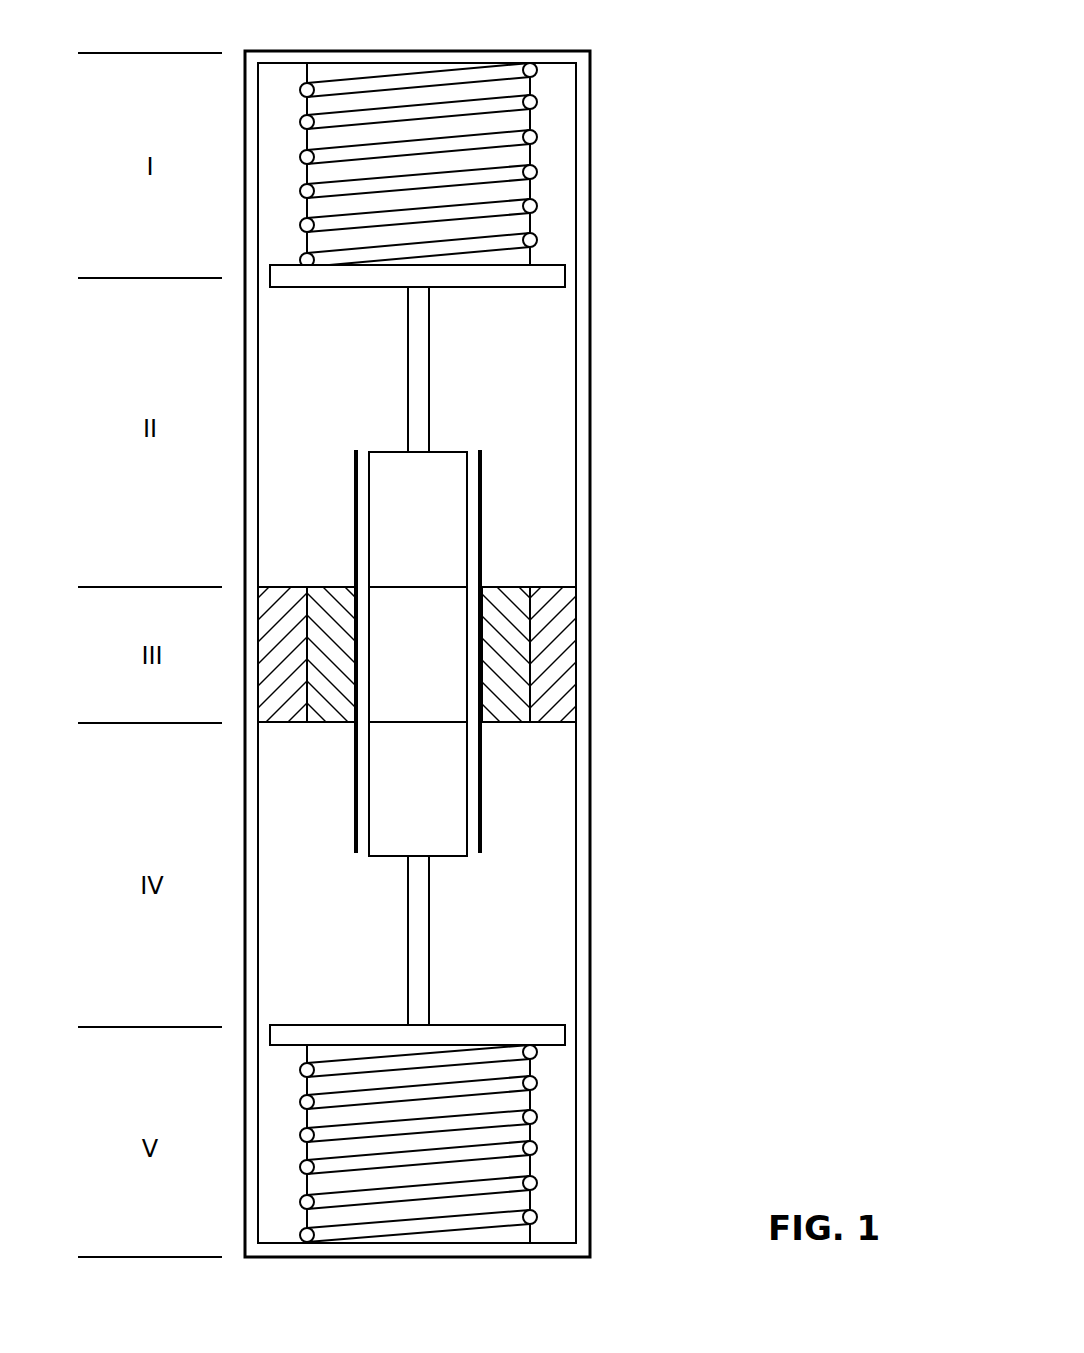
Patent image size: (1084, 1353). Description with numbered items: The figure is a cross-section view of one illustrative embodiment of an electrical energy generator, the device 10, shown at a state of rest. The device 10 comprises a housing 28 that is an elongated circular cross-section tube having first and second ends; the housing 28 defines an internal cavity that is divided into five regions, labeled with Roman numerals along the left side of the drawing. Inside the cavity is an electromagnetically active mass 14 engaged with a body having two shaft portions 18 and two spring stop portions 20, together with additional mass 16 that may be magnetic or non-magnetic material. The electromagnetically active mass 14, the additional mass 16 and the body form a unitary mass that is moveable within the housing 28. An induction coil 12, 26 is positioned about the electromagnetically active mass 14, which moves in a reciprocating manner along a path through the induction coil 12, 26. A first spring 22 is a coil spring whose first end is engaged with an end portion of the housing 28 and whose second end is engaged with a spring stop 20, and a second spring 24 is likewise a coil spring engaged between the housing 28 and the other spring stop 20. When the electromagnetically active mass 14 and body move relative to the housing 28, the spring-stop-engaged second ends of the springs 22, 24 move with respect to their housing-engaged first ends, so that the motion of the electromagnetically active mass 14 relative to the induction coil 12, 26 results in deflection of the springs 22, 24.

The device 10 is at (653, 63).
The induction coil 12 is at (473, 624).
The electromagnetically active mass 14 is at (428, 655).
The additional mass 16 is at (427, 498).
The shaft portion 18 is at (420, 382).
The spring stop portion 20 is at (550, 275).
The first spring 22 is at (507, 173).
The second spring 24 is at (510, 1117).
The induction coil 26 is at (552, 695).
The housing 28 is at (550, 1249).